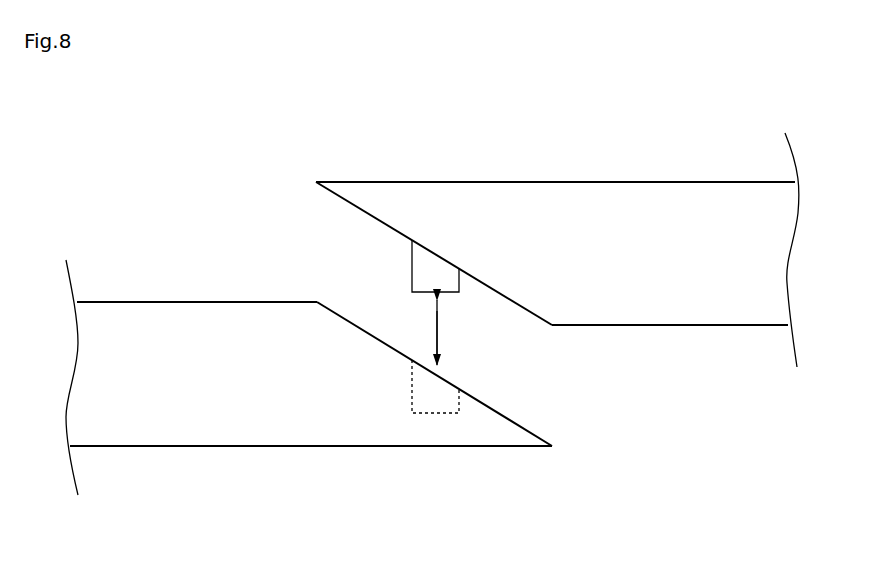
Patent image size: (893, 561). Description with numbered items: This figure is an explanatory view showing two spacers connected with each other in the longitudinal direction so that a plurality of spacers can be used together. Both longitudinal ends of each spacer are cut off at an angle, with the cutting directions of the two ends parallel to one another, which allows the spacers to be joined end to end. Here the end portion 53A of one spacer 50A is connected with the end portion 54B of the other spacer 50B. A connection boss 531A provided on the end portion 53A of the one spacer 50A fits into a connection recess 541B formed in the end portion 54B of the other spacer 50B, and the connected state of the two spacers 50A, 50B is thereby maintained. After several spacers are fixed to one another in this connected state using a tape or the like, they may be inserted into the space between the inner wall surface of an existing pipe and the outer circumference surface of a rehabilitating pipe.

The one spacer 50A is at (515, 242).
The other spacer 50B is at (353, 367).
The end portion of one spacer 53A is at (513, 302).
The end portion of other spacer 54B is at (490, 407).
The connection boss 531A is at (412, 273).
The connection recess 541B is at (435, 413).